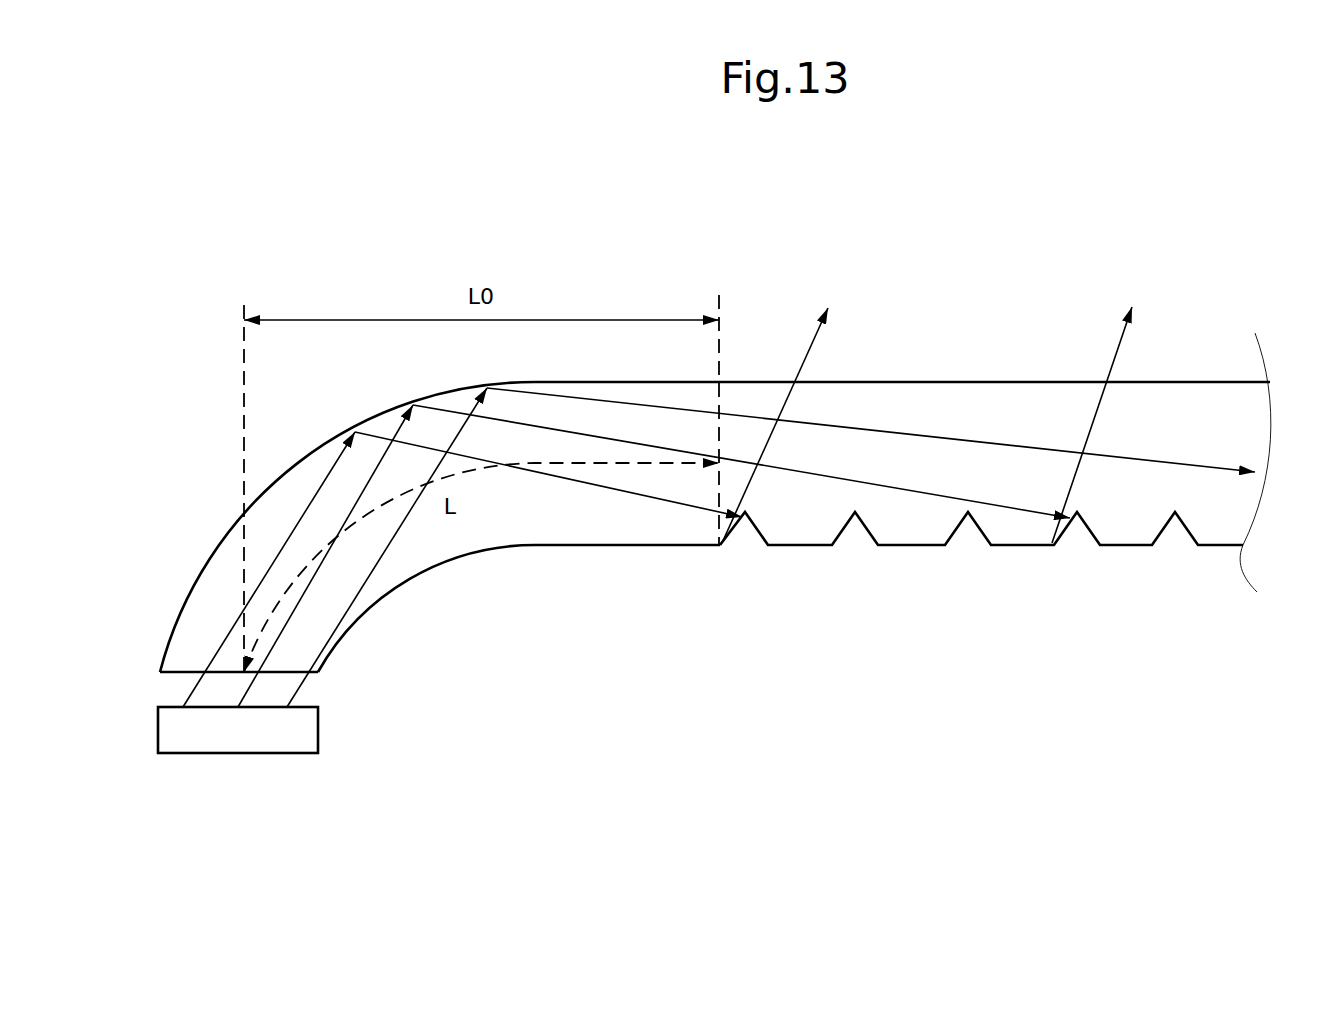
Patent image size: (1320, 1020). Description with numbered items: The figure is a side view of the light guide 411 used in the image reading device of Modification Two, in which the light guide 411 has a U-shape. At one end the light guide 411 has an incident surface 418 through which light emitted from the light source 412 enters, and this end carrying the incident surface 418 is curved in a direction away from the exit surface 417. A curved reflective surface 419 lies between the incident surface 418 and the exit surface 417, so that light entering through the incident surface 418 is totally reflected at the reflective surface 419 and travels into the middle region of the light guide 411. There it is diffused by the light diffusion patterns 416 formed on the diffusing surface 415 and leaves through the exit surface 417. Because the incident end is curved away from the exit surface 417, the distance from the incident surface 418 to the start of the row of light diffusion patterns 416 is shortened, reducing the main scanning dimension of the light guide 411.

The light guide 411 is at (715, 507).
The light source 412 is at (240, 753).
The diffusing surface 415 is at (628, 545).
The light diffusion patterns 416 is at (768, 545).
The exit surface 417 is at (872, 382).
The incident surface 418 is at (318, 672).
The reflective surface 419 is at (283, 480).